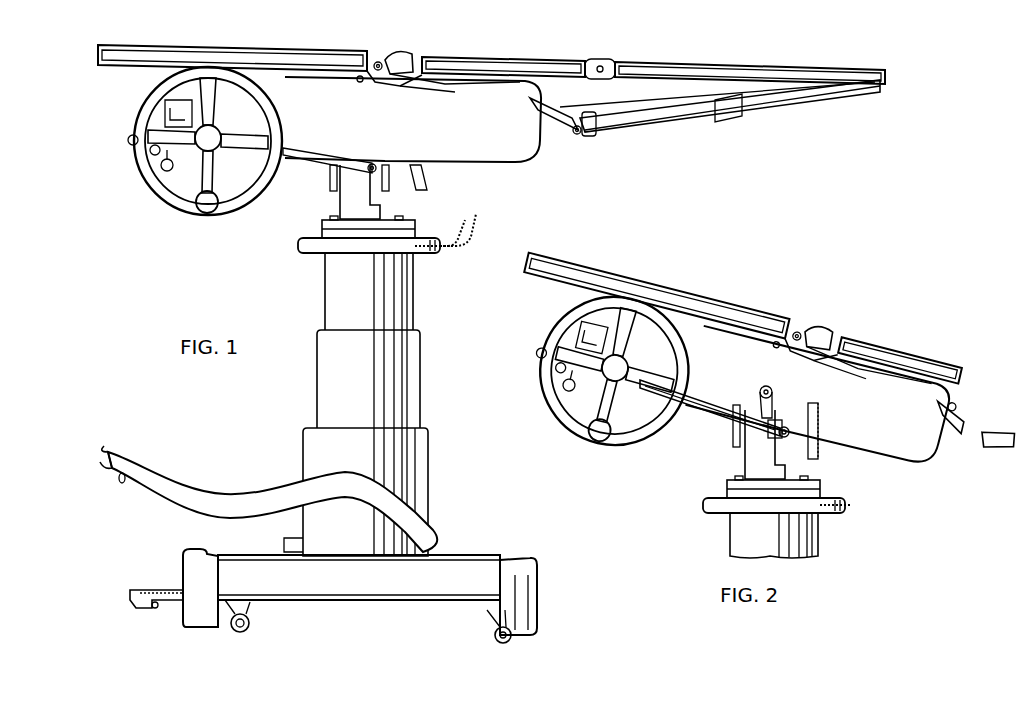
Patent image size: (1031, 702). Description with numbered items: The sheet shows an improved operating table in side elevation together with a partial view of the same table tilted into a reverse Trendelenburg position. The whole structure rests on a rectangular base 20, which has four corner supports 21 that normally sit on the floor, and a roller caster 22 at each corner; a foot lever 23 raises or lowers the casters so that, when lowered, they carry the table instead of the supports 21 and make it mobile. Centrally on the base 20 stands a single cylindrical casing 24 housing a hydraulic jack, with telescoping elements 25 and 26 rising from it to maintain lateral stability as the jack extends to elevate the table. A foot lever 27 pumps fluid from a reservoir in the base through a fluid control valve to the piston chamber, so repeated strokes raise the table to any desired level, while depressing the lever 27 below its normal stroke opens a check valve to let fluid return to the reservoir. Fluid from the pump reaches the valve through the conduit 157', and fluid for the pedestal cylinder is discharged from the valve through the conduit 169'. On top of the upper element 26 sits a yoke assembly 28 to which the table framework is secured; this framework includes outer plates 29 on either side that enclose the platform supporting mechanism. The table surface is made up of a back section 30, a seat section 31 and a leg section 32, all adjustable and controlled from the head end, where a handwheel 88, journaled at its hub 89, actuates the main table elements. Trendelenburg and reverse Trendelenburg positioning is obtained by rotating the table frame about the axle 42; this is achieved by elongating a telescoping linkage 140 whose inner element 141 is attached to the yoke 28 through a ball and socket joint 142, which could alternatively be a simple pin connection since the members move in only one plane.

In FIG. 1, the base 20 is at (183, 577).
In FIG. 1, the corner supports 21 is at (195, 617).
In FIG. 1, the roller caster 22 is at (250, 621).
In FIG. 1, the foot lever 23 is at (152, 592).
In FIG. 1, the cylindrical casing 24 is at (303, 447).
In FIG. 1, the telescoping element 25 is at (317, 385).
In FIG. 1, the telescoping element 26 is at (325, 299).
In FIG. 1, the foot lever 27 is at (110, 455).
In FIG. 1, the yoke assembly 28 is at (318, 220).
In FIG. 1, the outer plates 29 is at (523, 153).
In FIG. 1, the back section 30 is at (170, 52).
In FIG. 1, the seat section 31 is at (527, 64).
In FIG. 1, the leg section 32 is at (770, 70).
In FIG. 2, the axle 42 is at (760, 392).
In FIG. 1, the handwheel 88 is at (152, 182).
In FIG. 1, the hub 89 is at (222, 130).
In FIG. 2, the telescoping linkage 140 is at (715, 420).
In FIG. 2, the inner element 141 is at (736, 445).
In FIG. 2, the ball and socket joint 142 is at (792, 447).
In FIG. 1, the conduit 157' is at (471, 230).
In FIG. 1, the conduit 169' is at (433, 219).